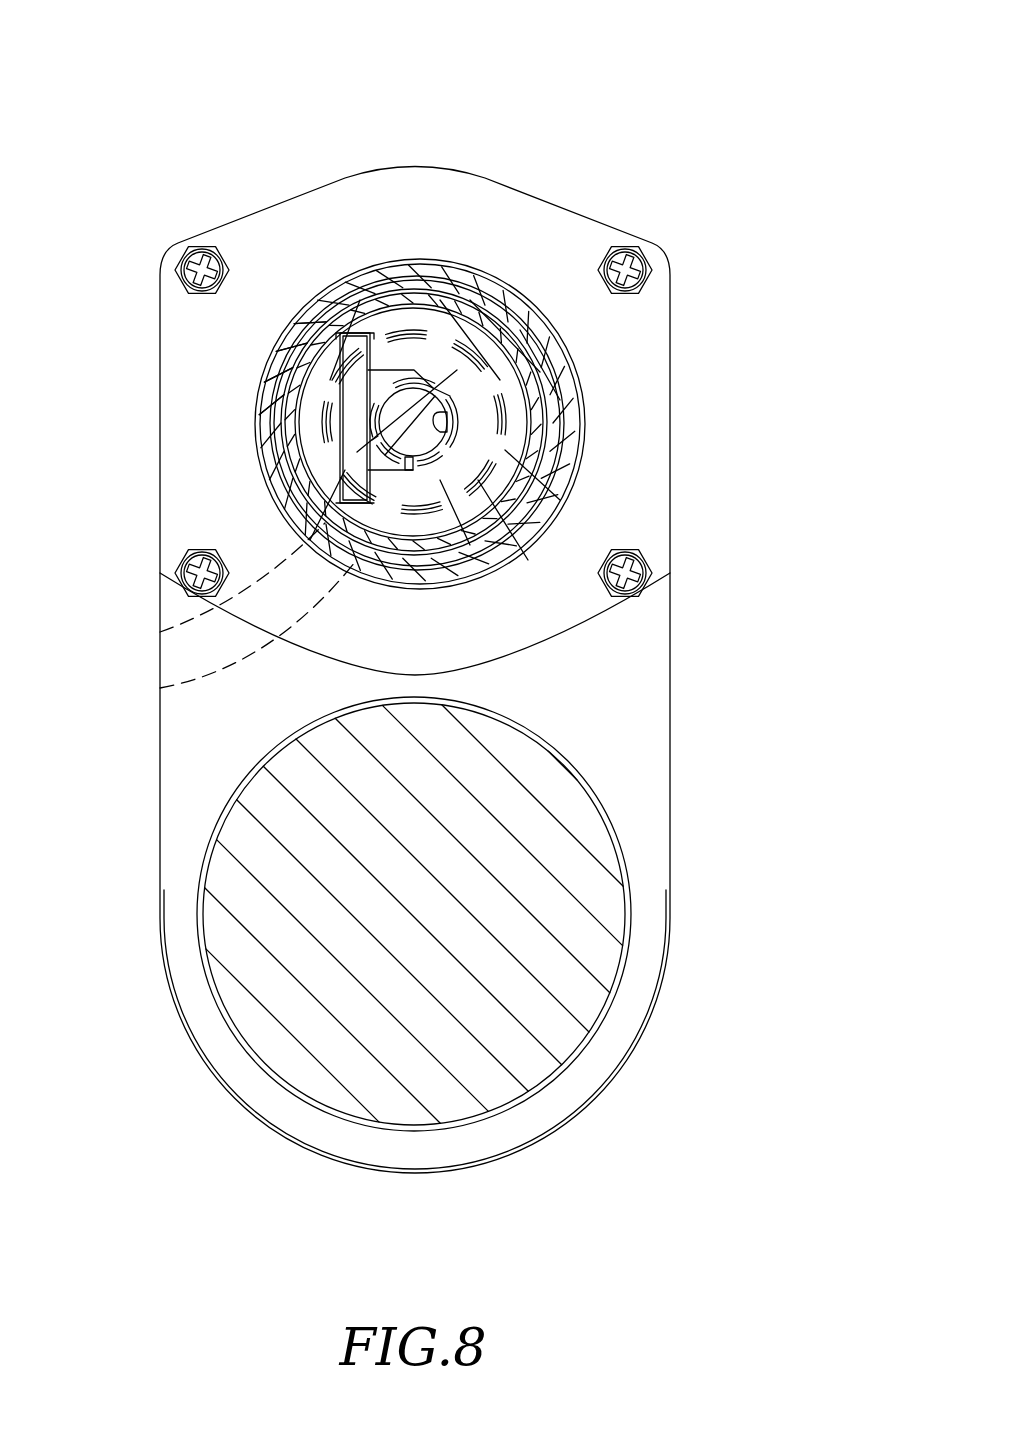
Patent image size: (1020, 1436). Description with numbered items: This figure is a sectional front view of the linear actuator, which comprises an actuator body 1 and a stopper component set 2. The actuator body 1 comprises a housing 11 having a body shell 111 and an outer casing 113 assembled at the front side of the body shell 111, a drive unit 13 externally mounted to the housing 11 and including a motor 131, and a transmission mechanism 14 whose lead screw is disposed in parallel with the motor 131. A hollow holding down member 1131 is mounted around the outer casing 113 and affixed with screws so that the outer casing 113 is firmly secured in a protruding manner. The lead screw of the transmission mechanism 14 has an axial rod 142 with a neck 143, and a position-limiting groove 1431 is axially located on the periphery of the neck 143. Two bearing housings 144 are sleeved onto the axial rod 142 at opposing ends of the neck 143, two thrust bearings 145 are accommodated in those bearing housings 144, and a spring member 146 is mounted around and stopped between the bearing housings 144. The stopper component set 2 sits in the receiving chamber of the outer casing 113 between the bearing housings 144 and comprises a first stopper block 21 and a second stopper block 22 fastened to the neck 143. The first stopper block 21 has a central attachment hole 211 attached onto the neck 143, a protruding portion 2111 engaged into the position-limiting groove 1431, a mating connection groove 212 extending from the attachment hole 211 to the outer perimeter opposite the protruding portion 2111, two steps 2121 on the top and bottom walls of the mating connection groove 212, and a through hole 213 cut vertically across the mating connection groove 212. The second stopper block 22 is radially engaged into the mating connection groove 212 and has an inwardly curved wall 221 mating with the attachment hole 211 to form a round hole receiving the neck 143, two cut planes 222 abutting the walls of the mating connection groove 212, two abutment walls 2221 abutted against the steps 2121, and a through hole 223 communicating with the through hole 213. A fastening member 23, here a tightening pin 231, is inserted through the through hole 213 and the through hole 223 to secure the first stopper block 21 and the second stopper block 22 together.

The actuator body 1 is at (461, 720).
The housing 11 is at (722, 606).
The body shell 111 is at (650, 652).
The outer casing 113 is at (552, 382).
The hollow holding down member 1131 is at (608, 237).
The drive unit 13 is at (522, 1120).
The motor 131 is at (415, 1105).
The transmission mechanism 14 is at (340, 353).
The axial rod 142 is at (410, 398).
The neck 143 is at (448, 396).
The position-limiting groove 1431 is at (457, 372).
The bearing housings 144 is at (230, 612).
The thrust bearings 145 is at (162, 688).
The spring member 146 is at (310, 483).
The stopper component set 2 is at (437, 338).
The first stopper block 21 is at (514, 413).
The attachment hole 211 is at (460, 462).
The protruding portion 2111 is at (448, 421).
The mating connection groove 212 is at (381, 370).
The through hole 213 is at (335, 362).
The steps 2121 is at (437, 452).
The second stopper block 22 is at (258, 480).
The inwardly curved wall 221 is at (377, 435).
The cut planes 222 is at (328, 372).
The through hole 223 is at (342, 397).
The abutment walls 2221 is at (410, 470).
The fastening member 23 is at (320, 268).
The tightening pin 231 is at (350, 352).